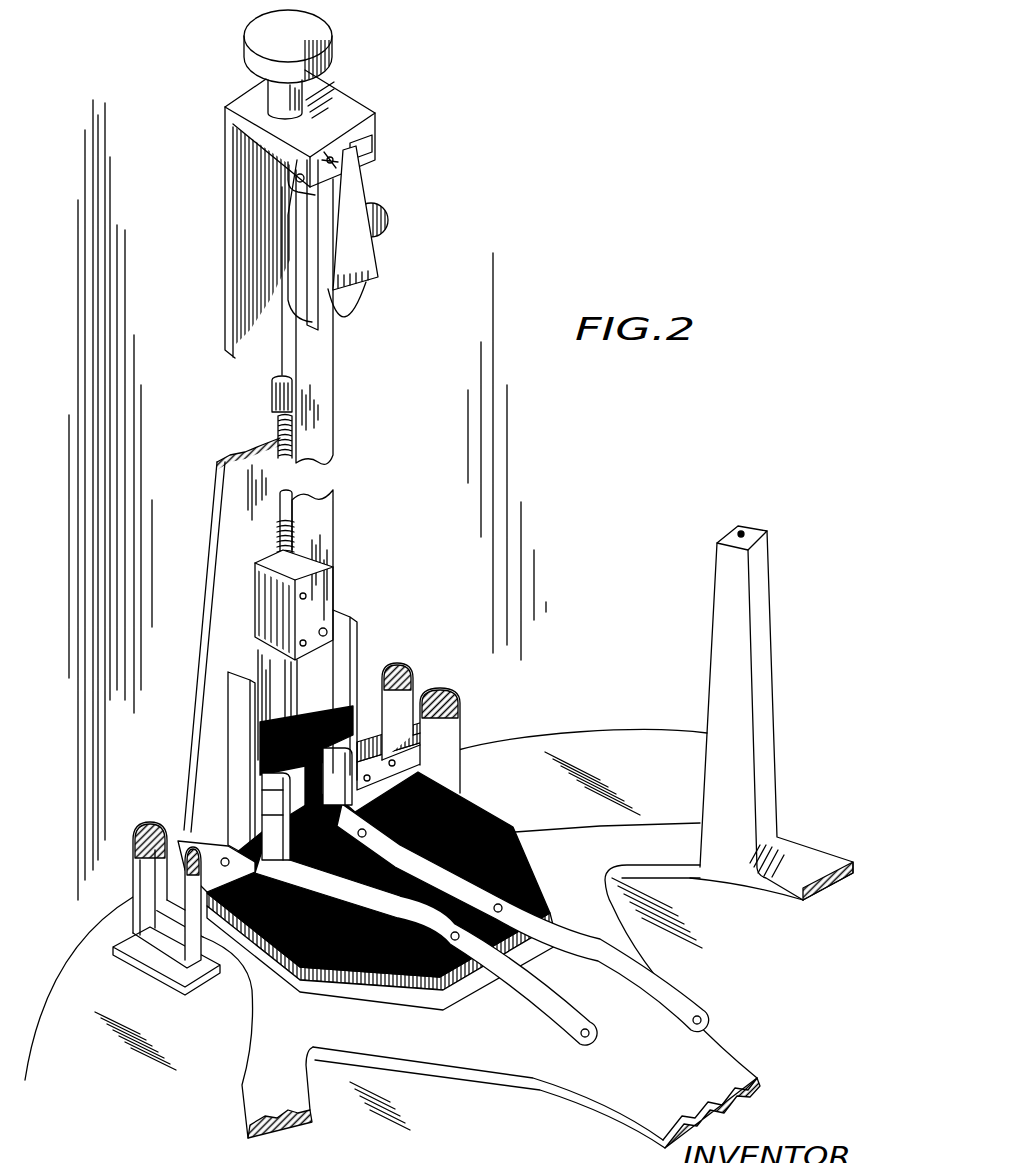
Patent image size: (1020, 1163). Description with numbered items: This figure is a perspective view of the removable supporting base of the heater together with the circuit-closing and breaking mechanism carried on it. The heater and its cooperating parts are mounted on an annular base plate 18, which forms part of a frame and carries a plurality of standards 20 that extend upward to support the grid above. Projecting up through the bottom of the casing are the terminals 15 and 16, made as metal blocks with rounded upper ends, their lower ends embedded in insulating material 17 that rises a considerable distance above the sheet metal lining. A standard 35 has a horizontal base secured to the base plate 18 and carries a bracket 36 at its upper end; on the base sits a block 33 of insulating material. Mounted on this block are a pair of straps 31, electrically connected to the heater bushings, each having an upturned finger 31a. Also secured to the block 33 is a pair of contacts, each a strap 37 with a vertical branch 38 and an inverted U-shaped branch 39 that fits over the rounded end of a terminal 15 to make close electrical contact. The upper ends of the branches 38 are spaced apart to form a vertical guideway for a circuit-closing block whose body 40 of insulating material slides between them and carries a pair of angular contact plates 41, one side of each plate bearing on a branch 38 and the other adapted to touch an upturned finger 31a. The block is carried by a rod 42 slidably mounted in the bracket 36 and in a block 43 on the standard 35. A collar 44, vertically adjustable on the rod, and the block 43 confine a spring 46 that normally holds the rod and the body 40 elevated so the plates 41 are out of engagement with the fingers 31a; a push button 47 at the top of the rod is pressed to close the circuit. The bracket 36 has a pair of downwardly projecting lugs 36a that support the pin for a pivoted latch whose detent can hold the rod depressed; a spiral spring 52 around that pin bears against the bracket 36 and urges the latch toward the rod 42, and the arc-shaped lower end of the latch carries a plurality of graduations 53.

The terminal 15 is at (152, 937).
The terminal 16 is at (458, 705).
The insulating material 17 is at (165, 977).
The annular base plate 18 is at (392, 938).
The standard 20 is at (767, 658).
The strap 31 is at (482, 924).
The upturned finger 31a is at (287, 807).
The block of insulating material 33 is at (482, 812).
The standard 35 is at (225, 327).
The bracket 36 is at (330, 98).
The downwardly projecting lug 36a is at (376, 143).
The strap 37 is at (220, 858).
The vertical branch 38 is at (228, 692).
The inverted U-shaped branch 39 is at (168, 840).
The body of insulating material 40 is at (265, 735).
The angular contact plate 41 is at (347, 720).
The rod 42 is at (282, 662).
The block 43 is at (268, 598).
The collar 44 is at (272, 400).
The spring 46 is at (280, 527).
The operating handle or push button 47 is at (288, 64).
The spiral spring 52 is at (320, 146).
The graduations 53 is at (355, 290).